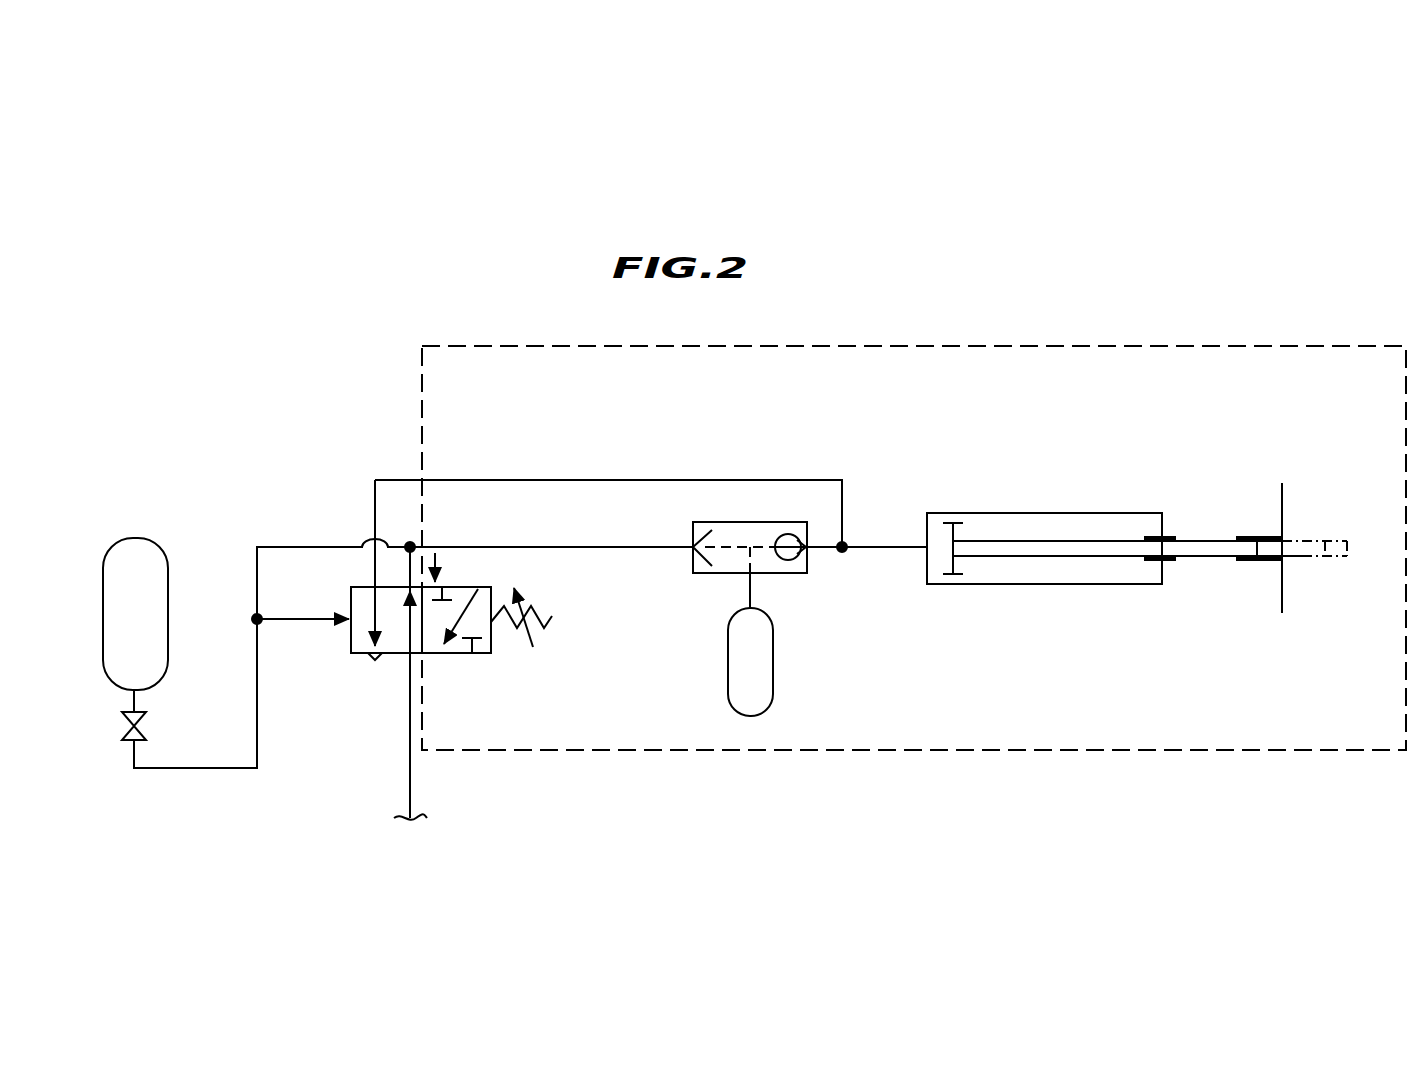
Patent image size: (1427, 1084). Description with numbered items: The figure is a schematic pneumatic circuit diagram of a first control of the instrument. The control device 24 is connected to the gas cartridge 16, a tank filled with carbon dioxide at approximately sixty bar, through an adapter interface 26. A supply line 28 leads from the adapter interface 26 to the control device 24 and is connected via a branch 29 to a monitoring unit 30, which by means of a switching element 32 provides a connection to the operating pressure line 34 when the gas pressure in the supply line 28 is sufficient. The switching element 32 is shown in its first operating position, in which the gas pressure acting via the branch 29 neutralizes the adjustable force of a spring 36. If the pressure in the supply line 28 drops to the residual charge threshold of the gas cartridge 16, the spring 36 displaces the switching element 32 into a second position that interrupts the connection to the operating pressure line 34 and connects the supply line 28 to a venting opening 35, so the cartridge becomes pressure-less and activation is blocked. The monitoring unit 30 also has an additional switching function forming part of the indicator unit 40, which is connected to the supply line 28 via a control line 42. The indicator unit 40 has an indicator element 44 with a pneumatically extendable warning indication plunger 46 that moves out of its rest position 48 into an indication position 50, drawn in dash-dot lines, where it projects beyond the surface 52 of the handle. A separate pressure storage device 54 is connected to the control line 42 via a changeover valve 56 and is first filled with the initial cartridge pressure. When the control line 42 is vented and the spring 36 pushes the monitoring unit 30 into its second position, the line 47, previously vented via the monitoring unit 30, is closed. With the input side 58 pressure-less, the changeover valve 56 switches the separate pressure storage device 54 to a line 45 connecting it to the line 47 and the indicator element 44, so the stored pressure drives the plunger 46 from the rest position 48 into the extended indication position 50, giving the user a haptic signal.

The gas cartridge 16 is at (140, 557).
The control device 24 is at (858, 462).
The adapter interface 26 is at (138, 724).
The supply line 28 is at (305, 547).
The branch 29 is at (283, 632).
The monitoring unit 30 is at (440, 553).
The switching element 32 is at (395, 656).
The operating pressure line 34 is at (410, 785).
The venting opening 35 is at (372, 658).
The spring 36 is at (552, 616).
The indicator unit 40 is at (924, 752).
The control line 42 is at (545, 547).
The indicator element 44 is at (1100, 513).
The line 45 is at (880, 550).
The warning indication plunger 46 is at (1304, 560).
The line 47 is at (592, 480).
The rest position 48 is at (1207, 558).
The indication position 50 is at (1347, 548).
The surface 52 is at (1283, 505).
The separate pressure storage device 54 is at (757, 688).
The changeover valve 56 is at (738, 522).
The input side 58 is at (693, 547).